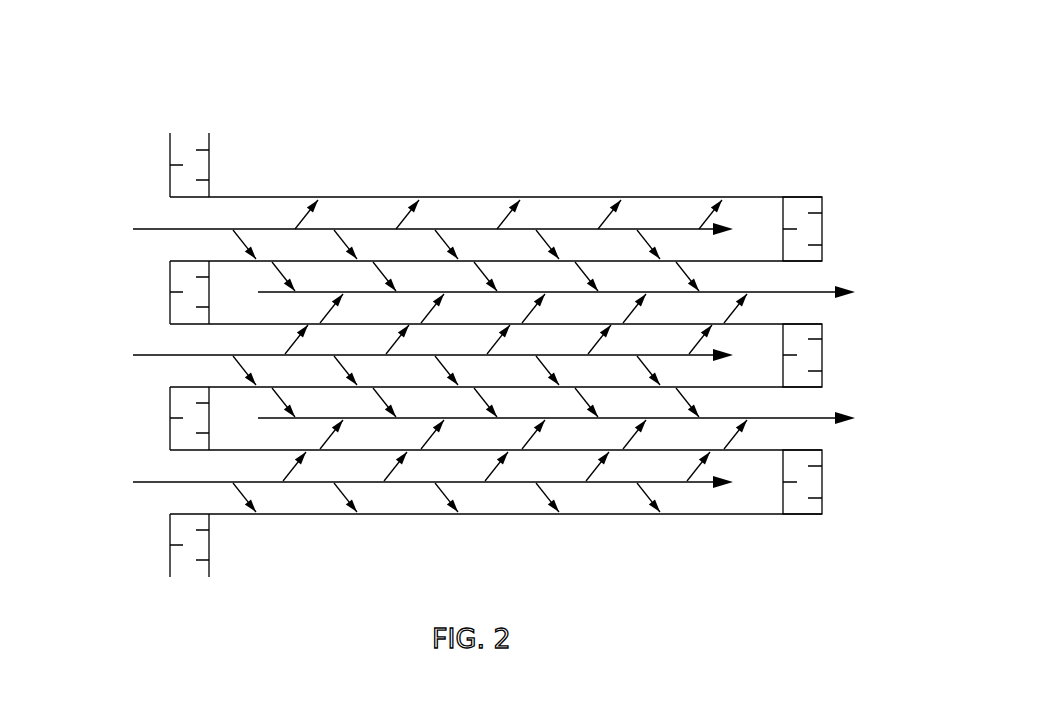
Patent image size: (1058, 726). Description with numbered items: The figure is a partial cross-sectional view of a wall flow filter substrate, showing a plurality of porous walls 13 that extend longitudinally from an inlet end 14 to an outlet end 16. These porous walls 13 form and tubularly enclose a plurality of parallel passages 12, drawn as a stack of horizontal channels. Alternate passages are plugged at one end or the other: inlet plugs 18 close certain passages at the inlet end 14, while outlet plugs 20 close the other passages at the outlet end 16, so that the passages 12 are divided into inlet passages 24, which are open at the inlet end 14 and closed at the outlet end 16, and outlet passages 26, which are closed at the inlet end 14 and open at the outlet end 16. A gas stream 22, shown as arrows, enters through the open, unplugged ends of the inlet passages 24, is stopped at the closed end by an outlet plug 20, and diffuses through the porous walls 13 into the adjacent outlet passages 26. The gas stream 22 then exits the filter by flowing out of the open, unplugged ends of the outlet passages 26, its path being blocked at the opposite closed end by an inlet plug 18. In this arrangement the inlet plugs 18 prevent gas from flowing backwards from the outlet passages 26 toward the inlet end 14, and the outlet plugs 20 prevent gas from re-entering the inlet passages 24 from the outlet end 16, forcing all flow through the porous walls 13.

The passages 12 is at (230, 272).
The porous walls 13 is at (487, 258).
The inlet end 14 is at (140, 108).
The outlet end 16 is at (868, 169).
The inlet plugs 18 is at (182, 176).
The outlet plugs 20 is at (822, 235).
The gas stream 22 is at (270, 228).
The inlet passages 24 is at (195, 222).
The outlet passages 26 is at (815, 319).